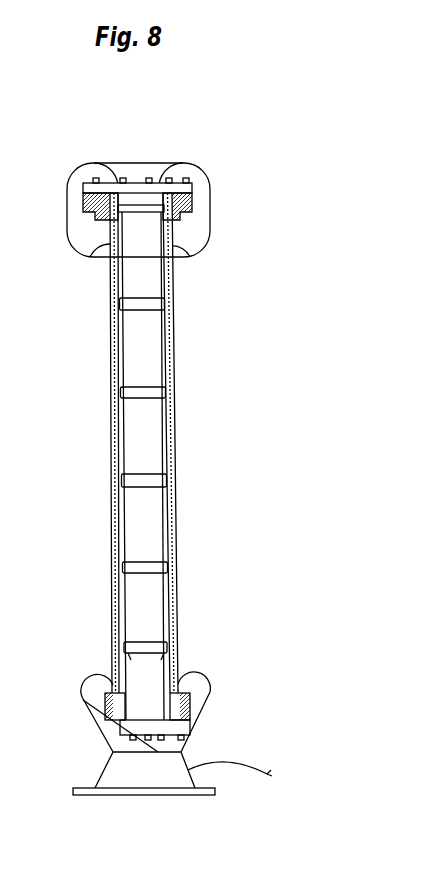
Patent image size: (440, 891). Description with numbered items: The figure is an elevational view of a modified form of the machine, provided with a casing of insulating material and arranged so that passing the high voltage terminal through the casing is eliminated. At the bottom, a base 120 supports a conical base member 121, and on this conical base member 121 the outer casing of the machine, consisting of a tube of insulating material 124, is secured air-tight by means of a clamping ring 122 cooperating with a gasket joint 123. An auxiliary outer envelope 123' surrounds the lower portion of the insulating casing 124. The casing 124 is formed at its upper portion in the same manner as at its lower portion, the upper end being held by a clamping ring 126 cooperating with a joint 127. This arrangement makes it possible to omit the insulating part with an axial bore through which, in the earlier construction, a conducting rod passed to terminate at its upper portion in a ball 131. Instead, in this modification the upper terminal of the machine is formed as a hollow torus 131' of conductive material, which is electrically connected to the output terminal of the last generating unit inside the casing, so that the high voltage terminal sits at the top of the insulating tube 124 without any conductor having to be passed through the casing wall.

The base 120 is at (160, 795).
The conical base member 121 is at (170, 773).
The clamping ring 122 is at (197, 720).
The gasket joint 123 is at (208, 694).
The auxiliary outer envelope 123' is at (103, 714).
The tube of insulating material 124 is at (115, 562).
The clamping ring 126 is at (192, 188).
The joint 127 is at (188, 212).
The ball 131 is at (78, 214).
The hollow torus 131' is at (192, 221).